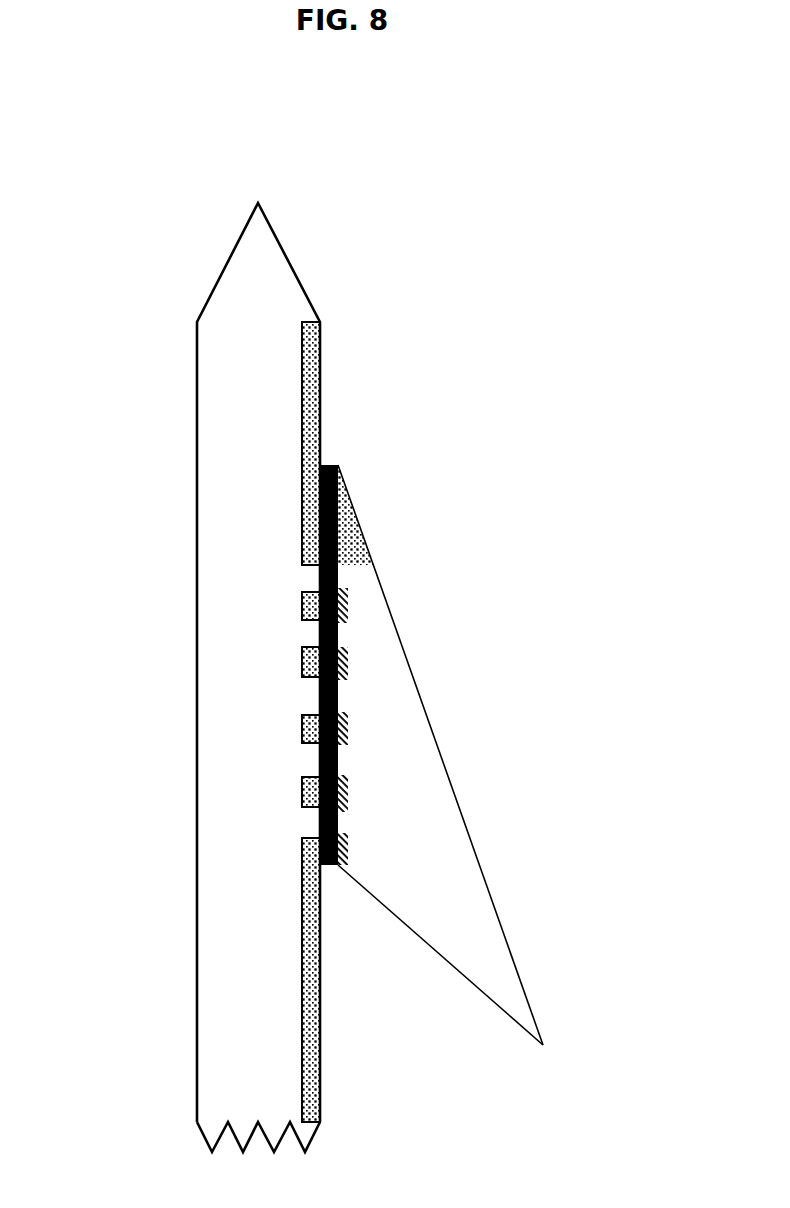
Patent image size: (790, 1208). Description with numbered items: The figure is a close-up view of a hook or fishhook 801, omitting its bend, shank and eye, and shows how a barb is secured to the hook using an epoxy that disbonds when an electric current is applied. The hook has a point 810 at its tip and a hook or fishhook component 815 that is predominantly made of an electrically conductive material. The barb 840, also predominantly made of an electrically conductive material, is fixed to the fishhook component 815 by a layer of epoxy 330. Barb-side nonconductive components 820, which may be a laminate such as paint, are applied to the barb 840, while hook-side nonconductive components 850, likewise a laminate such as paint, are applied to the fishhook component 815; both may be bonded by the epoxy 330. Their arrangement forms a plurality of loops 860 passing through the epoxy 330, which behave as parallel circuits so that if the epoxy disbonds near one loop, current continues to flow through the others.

The fishhook 801 is at (114, 145).
The point 810 is at (249, 677).
The fishhook component 815 is at (275, 722).
The epoxy 330 is at (332, 460).
The barb-side nonconductive components 820 is at (358, 848).
The barb 840 is at (458, 755).
The hook-side nonconductive components 850 is at (290, 930).
The plurality of loops 860 is at (297, 704).